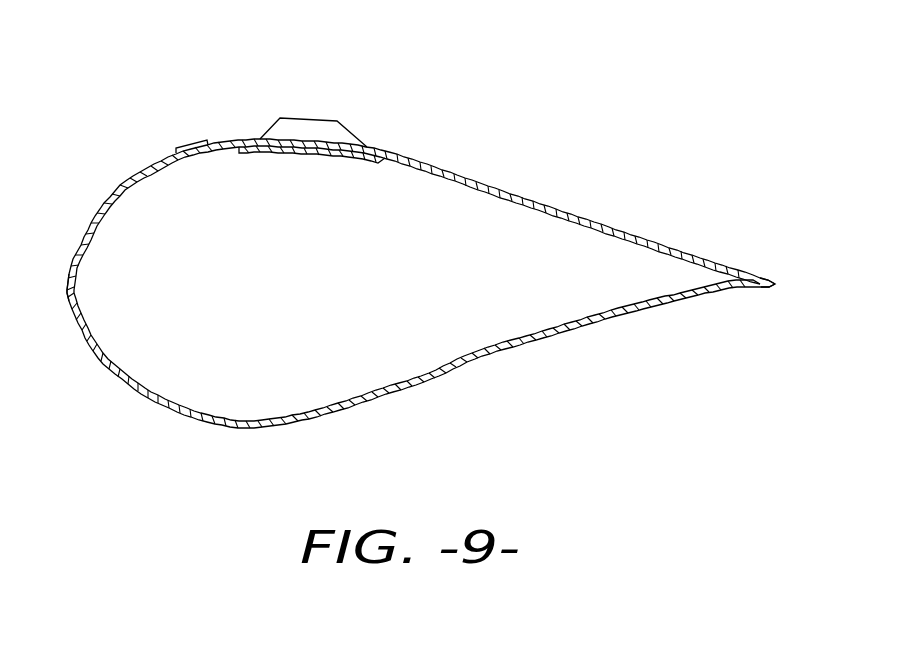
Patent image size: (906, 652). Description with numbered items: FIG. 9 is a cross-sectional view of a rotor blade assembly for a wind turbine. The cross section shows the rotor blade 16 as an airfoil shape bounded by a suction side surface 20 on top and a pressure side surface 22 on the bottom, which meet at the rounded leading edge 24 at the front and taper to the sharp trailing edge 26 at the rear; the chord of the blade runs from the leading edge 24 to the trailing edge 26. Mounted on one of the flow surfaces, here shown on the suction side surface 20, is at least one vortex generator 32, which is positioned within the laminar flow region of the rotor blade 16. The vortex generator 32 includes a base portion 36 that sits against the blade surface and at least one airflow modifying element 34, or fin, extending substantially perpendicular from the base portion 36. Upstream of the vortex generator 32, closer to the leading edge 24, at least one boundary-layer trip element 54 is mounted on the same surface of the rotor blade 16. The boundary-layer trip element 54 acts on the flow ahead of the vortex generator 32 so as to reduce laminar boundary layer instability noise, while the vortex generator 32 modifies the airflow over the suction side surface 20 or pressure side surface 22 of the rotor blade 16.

The rotor blade 16 is at (605, 113).
The suction side surface 20 is at (455, 173).
The pressure side surface 22 is at (290, 428).
The leading edge 24 is at (68, 283).
The trailing edge 26 is at (775, 283).
The vortex generator 32 is at (335, 100).
The airflow modifying element 34 is at (330, 120).
The base portion 36 is at (357, 140).
The boundary-layer trip element 54 is at (189, 143).